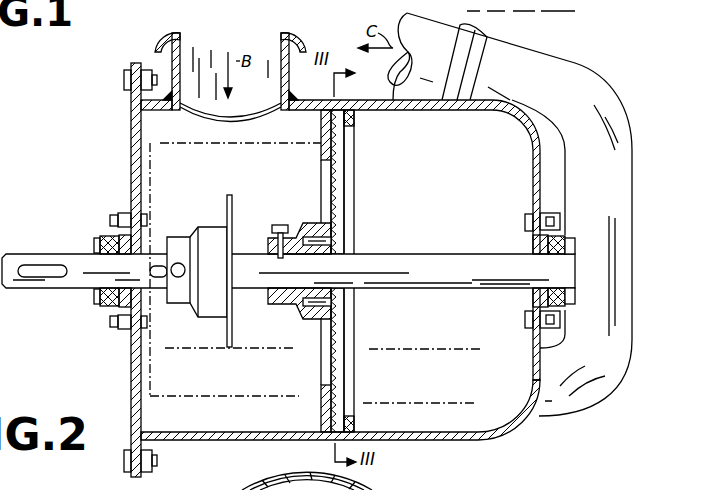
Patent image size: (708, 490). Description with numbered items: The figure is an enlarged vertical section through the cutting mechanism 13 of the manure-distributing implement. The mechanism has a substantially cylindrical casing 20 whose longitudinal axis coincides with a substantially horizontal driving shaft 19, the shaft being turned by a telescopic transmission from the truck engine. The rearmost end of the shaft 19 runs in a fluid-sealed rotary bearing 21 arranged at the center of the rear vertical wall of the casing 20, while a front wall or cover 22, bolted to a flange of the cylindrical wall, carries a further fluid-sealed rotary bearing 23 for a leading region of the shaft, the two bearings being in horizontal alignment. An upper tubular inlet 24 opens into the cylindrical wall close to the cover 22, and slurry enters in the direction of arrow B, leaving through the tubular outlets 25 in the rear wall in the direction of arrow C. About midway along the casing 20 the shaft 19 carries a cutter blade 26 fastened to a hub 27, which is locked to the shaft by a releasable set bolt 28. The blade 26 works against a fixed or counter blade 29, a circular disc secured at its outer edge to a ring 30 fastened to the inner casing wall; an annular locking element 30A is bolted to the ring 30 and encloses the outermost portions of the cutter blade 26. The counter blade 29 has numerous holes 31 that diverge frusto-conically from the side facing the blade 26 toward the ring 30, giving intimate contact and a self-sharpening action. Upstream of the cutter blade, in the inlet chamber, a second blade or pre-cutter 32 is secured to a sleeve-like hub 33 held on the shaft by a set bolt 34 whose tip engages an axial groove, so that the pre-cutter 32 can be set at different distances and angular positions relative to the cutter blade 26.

The cutting mechanism 13 is at (490, 438).
The driving shaft 19 is at (43, 256).
The casing 20 is at (532, 173).
The rotary bearing 21 is at (572, 235).
The front wall or cover 22 is at (132, 117).
The rotary bearing 23 is at (100, 300).
The tubular inlet 24 is at (200, 40).
The tubular outlet 25 is at (602, 379).
The cutter blade 26 is at (329, 373).
The hub 27 is at (303, 306).
The set bolt 28 is at (286, 225).
The fixed or counter blade 29 is at (339, 190).
The ring 30 is at (346, 426).
The annular locking element 30A is at (322, 423).
The hole 31 is at (343, 147).
The second blade or pre-cutter 32 is at (230, 196).
The sleeve-like hub 33 is at (208, 225).
The set bolt 34 is at (178, 277).